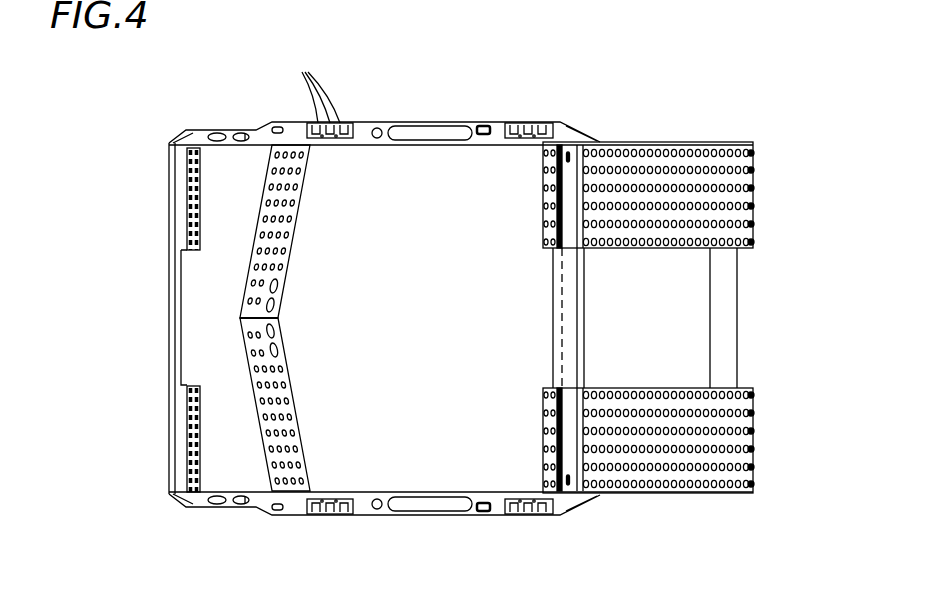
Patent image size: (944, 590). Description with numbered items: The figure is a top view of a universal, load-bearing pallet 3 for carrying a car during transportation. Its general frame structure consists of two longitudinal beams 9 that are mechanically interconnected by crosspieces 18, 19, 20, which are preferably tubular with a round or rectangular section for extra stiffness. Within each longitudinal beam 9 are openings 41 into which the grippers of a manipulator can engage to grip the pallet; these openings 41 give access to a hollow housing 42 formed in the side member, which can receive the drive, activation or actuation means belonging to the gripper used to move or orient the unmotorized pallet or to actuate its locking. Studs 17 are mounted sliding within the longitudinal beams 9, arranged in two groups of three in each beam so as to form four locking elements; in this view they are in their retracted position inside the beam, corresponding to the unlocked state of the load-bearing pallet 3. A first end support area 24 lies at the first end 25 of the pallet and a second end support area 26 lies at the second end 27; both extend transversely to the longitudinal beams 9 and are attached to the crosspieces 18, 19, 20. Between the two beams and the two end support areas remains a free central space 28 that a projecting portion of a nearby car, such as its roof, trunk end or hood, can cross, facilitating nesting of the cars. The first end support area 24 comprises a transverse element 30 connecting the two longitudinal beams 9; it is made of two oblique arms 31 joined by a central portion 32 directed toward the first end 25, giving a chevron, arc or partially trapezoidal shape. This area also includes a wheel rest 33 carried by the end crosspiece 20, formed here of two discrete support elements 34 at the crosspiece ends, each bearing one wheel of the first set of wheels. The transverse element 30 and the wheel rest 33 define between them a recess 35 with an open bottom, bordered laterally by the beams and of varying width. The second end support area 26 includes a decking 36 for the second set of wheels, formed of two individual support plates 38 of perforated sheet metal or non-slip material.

The load-bearing pallet 3 is at (100, 118).
The longitudinal beam 9 is at (496, 127).
The stud 17 is at (309, 88).
The crosspiece 18 is at (728, 304).
The crosspiece 19 is at (550, 319).
The end crosspiece 20 is at (177, 338).
The first end support area 24 is at (237, 114).
The first end 25 is at (142, 278).
The second end support area 26 is at (665, 128).
The second end 27 is at (752, 363).
The central space 28 is at (410, 185).
The transverse element 30 is at (300, 318).
The oblique arm 31 is at (286, 213).
The central portion 32 is at (242, 318).
The wheel rest 33 is at (195, 194).
The support element 34 is at (132, 320).
The recess 35 is at (226, 462).
The decking 36 is at (718, 182).
The support plate 38 is at (681, 244).
The opening 41 is at (446, 135).
The hollow housing 42 is at (408, 130).